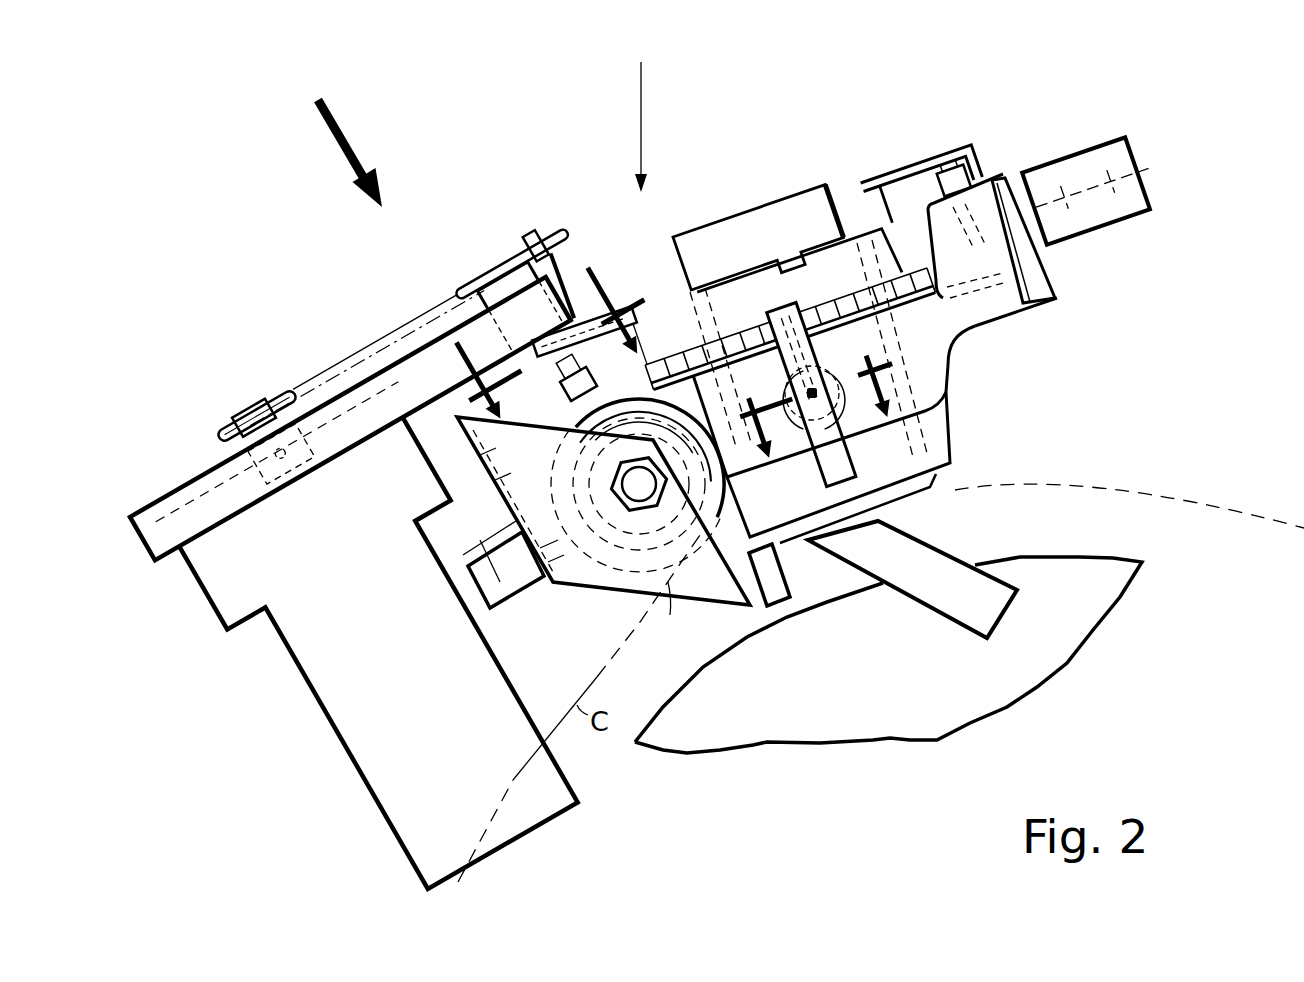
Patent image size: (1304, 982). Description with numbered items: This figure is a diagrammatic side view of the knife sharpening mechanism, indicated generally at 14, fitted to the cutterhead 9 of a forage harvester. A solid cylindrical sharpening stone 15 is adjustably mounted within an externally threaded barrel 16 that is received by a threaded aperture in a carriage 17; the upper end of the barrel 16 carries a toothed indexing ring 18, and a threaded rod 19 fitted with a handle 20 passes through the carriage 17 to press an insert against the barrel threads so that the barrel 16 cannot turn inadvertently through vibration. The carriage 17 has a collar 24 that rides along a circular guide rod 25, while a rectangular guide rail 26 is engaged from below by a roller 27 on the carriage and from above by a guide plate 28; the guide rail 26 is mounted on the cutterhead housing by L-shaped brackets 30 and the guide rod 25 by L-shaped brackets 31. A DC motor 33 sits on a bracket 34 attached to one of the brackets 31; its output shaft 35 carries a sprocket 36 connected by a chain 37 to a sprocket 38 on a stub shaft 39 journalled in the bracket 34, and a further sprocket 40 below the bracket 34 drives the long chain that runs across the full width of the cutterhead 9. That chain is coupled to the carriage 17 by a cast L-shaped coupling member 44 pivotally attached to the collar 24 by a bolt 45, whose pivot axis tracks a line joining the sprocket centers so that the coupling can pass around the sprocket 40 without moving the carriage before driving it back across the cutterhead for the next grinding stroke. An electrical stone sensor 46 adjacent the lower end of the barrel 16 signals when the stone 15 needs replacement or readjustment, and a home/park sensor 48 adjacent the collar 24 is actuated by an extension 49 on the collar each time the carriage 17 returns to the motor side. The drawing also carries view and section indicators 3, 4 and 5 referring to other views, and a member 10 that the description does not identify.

The view direction arrow (FIG. 3) 3 is at (341, 135).
The section line 4- 4 is at (548, 344).
The section line 5- 5 is at (821, 399).
The cutterhead 9 is at (1078, 643).
The lever arm 10 is at (917, 548).
The knife grinding or sharpening mechanism 14 is at (640, 109).
The sharpening stone 15 is at (760, 217).
The barrel 16 is at (948, 428).
The carriage 17 is at (945, 332).
The toothed indexing ring 18 is at (655, 360).
The threaded rod 19 is at (840, 422).
The handle 20 is at (838, 460).
The collar 24 is at (738, 560).
The guide rod 25 is at (700, 500).
The guide rail 26 is at (1022, 175).
The roller 27 is at (1058, 296).
The guide plate 28 is at (993, 173).
The L-shaped brackets 30 is at (1140, 176).
The L-shaped brackets 31 is at (670, 615).
The DC motor 33 is at (362, 745).
The bracket 34 is at (180, 500).
The output shaft 35 is at (257, 408).
The sprocket 36 is at (218, 434).
The chain 37 is at (386, 343).
The sprocket 38 is at (524, 254).
The stub shaft 39 is at (502, 272).
The sprocket 40 is at (593, 323).
The coupling member 44 is at (651, 363).
The bolt 45 is at (570, 385).
The electrical stone sensor 46 is at (790, 590).
The home/park sensor 48 is at (518, 580).
The extension 49 is at (555, 527).